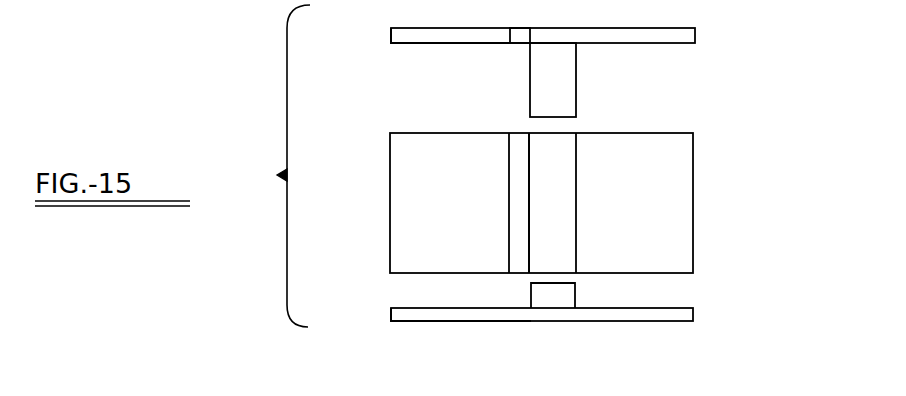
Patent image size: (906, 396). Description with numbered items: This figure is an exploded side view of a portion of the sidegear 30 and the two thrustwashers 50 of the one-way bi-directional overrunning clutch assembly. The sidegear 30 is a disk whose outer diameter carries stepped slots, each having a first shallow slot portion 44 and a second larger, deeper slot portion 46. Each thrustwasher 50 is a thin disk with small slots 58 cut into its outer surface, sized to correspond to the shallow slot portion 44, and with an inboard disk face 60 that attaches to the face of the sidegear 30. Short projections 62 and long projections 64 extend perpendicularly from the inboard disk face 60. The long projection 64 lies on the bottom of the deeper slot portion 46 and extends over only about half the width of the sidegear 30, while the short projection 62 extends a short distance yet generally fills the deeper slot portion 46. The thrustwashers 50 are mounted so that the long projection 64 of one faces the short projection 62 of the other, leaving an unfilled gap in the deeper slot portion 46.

The sidegear 30 is at (693, 198).
The shallow slot portion 44 is at (519, 138).
The deeper slot portion 46 is at (561, 140).
The thrustwasher 50 is at (695, 34).
The small slot 58 is at (521, 35).
The inboard disk face 60 is at (417, 44).
The short projection 62 is at (568, 293).
The long projection 64 is at (563, 75).